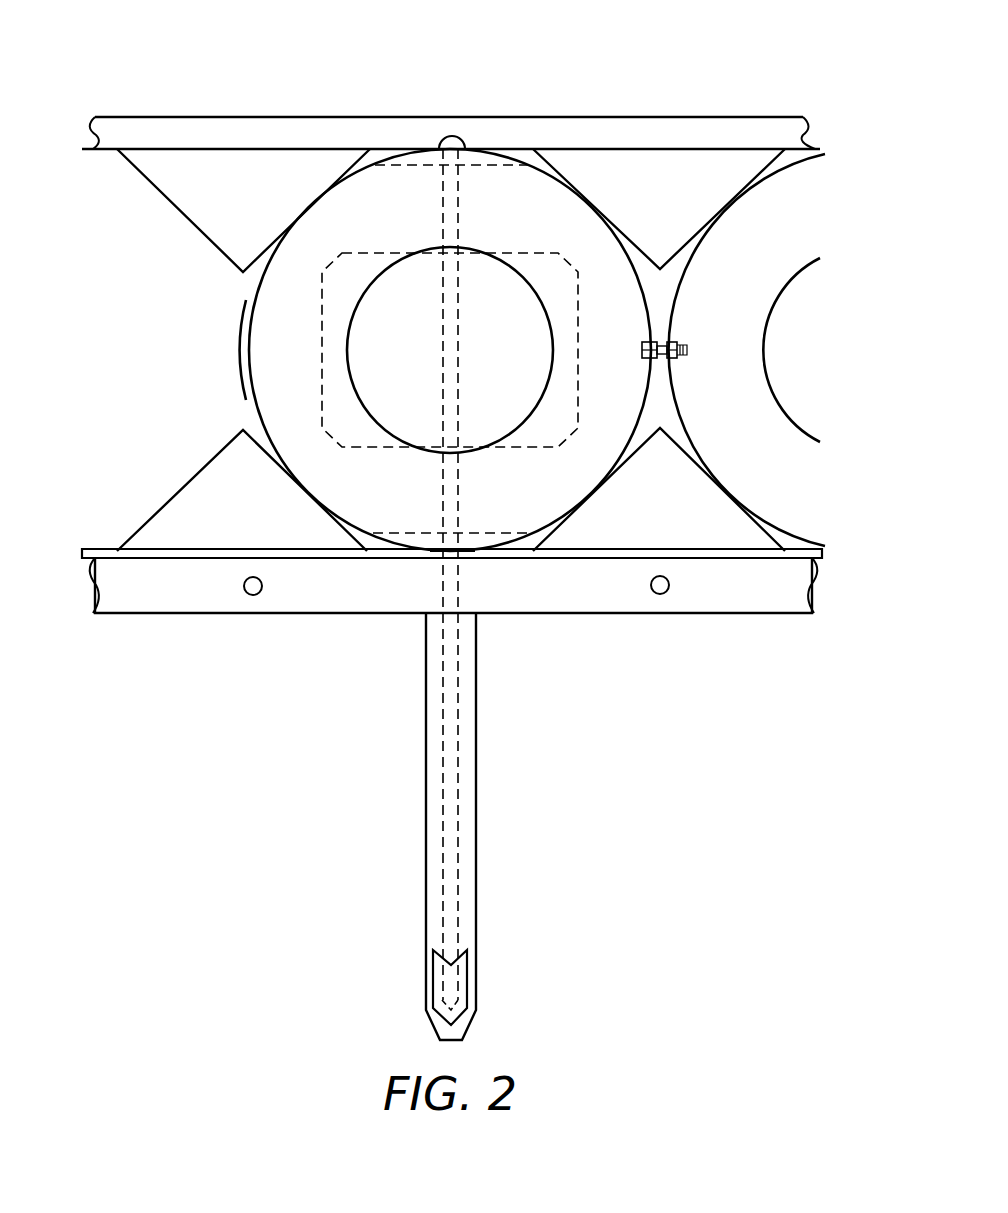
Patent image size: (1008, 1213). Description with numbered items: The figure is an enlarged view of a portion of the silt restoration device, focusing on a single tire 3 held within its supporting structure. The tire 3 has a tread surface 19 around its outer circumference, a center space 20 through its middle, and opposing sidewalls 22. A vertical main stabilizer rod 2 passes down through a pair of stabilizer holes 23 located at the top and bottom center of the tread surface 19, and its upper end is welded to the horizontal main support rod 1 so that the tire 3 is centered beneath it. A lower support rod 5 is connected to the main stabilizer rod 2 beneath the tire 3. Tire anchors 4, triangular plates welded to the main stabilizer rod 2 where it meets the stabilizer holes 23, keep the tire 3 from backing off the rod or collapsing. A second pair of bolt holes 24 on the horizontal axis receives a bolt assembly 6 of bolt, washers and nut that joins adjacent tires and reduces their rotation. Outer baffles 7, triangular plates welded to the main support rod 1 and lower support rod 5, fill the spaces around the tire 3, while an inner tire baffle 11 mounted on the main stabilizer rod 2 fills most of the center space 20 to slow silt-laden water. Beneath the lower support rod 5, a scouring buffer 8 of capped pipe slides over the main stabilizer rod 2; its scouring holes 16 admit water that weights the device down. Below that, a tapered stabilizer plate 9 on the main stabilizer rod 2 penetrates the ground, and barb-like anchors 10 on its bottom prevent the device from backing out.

The main support rod 1 is at (185, 135).
The main stabilizer rod 2 is at (452, 495).
The tire 3 is at (555, 215).
The tire anchor 4 is at (415, 165).
The lower support rod 5 is at (143, 556).
The bolt assembly 6 is at (668, 327).
The outer baffle 7 is at (725, 525).
The scouring buffer 8 is at (165, 587).
The stabilizer plate 9 is at (478, 832).
The anchor 10 is at (458, 981).
The inner tire baffle 11 is at (558, 287).
The scouring hole 16 is at (253, 596).
The tread surface 19 is at (415, 289).
The center space 20 is at (387, 317).
The sidewall 22 is at (292, 360).
The stabilizer hole 23 is at (463, 146).
The bolt hole 24 is at (638, 330).